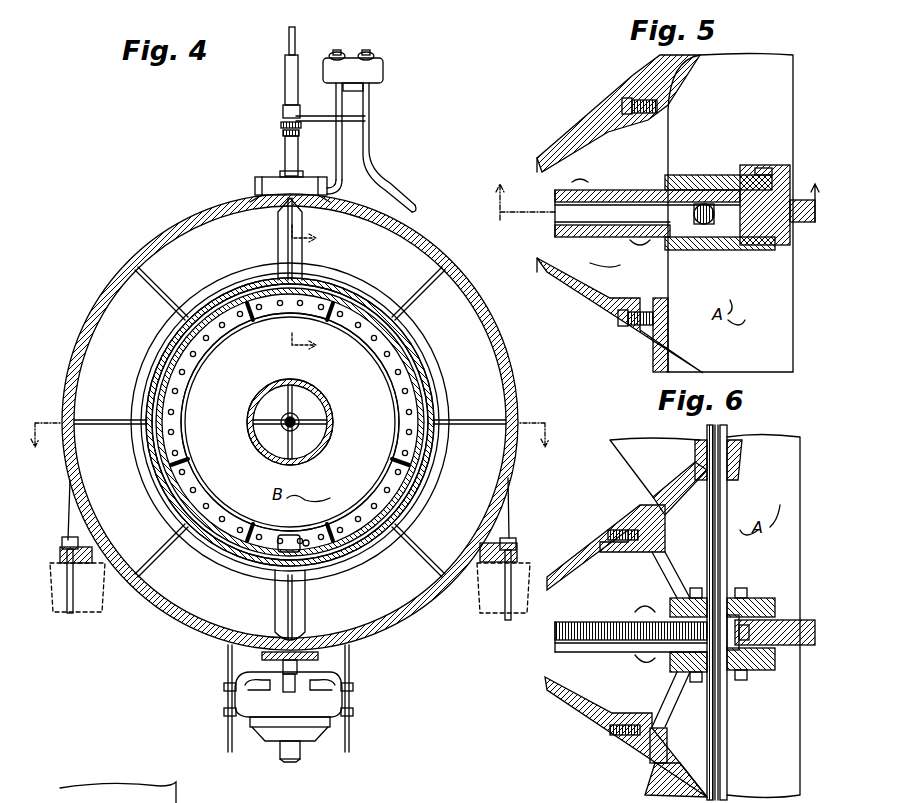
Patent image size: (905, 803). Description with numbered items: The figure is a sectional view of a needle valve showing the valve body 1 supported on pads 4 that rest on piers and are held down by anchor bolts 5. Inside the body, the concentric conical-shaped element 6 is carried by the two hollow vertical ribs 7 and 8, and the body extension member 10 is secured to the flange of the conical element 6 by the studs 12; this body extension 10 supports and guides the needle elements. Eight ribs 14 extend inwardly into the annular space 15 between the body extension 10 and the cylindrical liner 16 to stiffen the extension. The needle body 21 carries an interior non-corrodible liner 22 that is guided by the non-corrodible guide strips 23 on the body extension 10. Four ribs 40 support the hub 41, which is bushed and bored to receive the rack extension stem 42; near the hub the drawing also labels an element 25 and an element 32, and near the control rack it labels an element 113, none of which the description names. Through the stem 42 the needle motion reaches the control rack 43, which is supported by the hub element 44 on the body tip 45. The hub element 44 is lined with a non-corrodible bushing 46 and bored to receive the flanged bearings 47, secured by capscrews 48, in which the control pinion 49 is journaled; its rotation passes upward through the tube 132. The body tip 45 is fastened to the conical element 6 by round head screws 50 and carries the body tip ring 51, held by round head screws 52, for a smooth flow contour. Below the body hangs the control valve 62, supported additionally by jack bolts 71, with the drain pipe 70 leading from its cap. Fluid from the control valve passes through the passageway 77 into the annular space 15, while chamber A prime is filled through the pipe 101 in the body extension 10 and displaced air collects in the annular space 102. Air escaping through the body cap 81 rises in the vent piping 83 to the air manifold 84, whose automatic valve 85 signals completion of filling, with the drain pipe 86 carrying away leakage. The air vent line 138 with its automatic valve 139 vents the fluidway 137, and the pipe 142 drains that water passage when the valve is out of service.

In FIG. 4, the valve body 1 is at (172, 223).
In FIG. 4, the pads 4 is at (58, 556).
In FIG. 4, the anchor bolts 5 is at (70, 613).
In FIG. 5, the concentric conical-shaped element 6 is at (682, 72).
In FIG. 4, the hollow vertical rib 7 is at (318, 232).
In FIG. 4, the hollow vertical rib 8 is at (316, 602).
In FIG. 4, the body extension member 10 is at (364, 300).
In FIG. 4, the studs 12 is at (383, 358).
In FIG. 4, the ribs 14 is at (250, 318).
In FIG. 4, the annular space 15 is at (378, 496).
In FIG. 4, the cylindrical liner 16 is at (186, 395).
In FIG. 4, the needle body 21 is at (147, 388).
In FIG. 4, the interior non-corrodible liner 22 is at (160, 327).
In FIG. 4, the non-corrodible guide strips 23 is at (418, 372).
In FIG. 4, the hub ring 25 is at (325, 400).
In FIG. 4, the hub 32 is at (300, 462).
In FIG. 4, the ribs 40 is at (270, 428).
In FIG. 4, the hub 41 is at (282, 415).
In FIG. 6, the rack extension stem 42 is at (785, 620).
In FIG. 5, the control rack 43 is at (596, 190).
In FIG. 6, the control rack 43 is at (590, 622).
In FIG. 5, the hub element 44 is at (700, 178).
In FIG. 5, the body tip 45 is at (568, 280).
In FIG. 5, the non-corrodible bushing 46 is at (715, 250).
In FIG. 6, the flanged bearings 47 is at (745, 598).
In FIG. 6, the capscrews 48 is at (685, 598).
In FIG. 5, the control pinion 49 is at (700, 225).
In FIG. 6, the control pinion 49 is at (745, 635).
In FIG. 5, the round head screws 50 is at (638, 98).
In FIG. 5, the body tip ring 51 is at (622, 316).
In FIG. 6, the body tip ring 51 is at (618, 735).
In FIG. 6, the round head screws 52 is at (600, 530).
In FIG. 4, the control valve 62 is at (250, 705).
In FIG. 4, the pipe 70 is at (290, 755).
In FIG. 4, the jack bolts 71 is at (228, 668).
In FIG. 4, the passageway 77 is at (290, 535).
In FIG. 4, the body cap 81 is at (255, 183).
In FIG. 4, the vent piping 83 is at (336, 161).
In FIG. 4, the air manifold 84 is at (383, 75).
In FIG. 4, the automatic valve 85 is at (337, 51).
In FIG. 4, the drain pipe 86 is at (392, 200).
In FIG. 4, the pipe 101 is at (328, 516).
In FIG. 6, the annular space 102 is at (706, 455).
In FIG. 5, the plate 113 is at (728, 200).
In FIG. 6, the plate 113 is at (713, 520).
In FIG. 6, the tube 132 is at (727, 505).
In FIG. 4, the fluidway 137 is at (243, 251).
In FIG. 4, the air vent line 138 is at (290, 156).
In FIG. 4, the automatic valve 139 is at (370, 51).
In FIG. 4, the pipe 142 is at (283, 686).